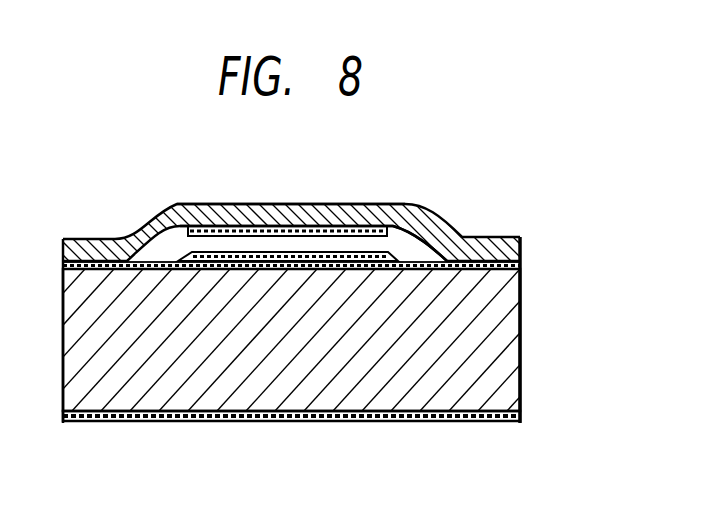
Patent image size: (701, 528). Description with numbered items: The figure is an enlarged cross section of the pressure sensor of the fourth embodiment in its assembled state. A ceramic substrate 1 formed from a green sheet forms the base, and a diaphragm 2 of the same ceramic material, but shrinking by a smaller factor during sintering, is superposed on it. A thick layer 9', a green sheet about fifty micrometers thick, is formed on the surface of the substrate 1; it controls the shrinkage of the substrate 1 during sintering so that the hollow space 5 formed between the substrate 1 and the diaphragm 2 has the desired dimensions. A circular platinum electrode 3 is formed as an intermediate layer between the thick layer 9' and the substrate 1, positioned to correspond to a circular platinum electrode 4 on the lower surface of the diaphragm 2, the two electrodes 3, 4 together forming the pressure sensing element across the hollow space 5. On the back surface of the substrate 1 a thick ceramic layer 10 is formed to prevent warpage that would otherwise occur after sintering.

The substrate 1 is at (516, 338).
The thick ceramic layer 10 is at (504, 421).
The thick layer 9' is at (291, 209).
The diaphragm 2 is at (123, 238).
The electrode 3 is at (276, 252).
The electrode 4 is at (357, 223).
The hollow space 5 is at (412, 244).